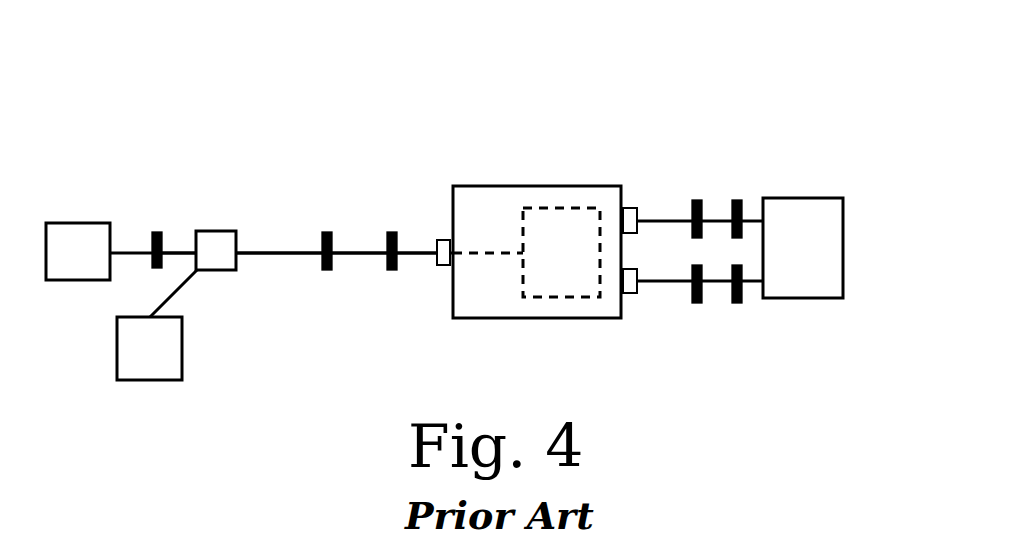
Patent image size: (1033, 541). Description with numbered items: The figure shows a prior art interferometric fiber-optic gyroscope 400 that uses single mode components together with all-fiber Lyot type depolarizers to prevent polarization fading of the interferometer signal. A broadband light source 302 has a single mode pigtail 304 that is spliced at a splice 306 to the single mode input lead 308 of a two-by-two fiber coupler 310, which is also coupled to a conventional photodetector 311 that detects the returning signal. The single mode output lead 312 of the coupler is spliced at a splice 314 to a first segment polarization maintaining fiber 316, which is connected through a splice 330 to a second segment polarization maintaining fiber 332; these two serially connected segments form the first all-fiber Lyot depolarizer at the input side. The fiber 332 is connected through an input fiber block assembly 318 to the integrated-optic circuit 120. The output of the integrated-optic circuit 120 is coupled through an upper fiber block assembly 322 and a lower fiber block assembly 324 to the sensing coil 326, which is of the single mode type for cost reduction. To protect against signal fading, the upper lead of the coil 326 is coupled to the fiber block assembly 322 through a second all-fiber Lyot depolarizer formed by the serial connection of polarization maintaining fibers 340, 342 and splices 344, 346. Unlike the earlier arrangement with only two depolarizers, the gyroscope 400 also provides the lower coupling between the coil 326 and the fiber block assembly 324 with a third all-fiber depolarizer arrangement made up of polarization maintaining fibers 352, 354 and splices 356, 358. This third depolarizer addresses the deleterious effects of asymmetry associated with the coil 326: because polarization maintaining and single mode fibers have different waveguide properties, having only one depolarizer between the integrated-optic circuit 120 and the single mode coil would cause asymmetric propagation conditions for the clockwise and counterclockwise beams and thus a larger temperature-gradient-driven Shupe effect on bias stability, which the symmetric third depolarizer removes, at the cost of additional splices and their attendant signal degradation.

The integrated-optic circuit 120 is at (553, 186).
The broadband light source 302 is at (74, 223).
The pigtail 304 is at (122, 255).
The splice 306 is at (158, 232).
The single mode input lead 308 is at (182, 252).
The fiber coupler 310 is at (218, 231).
The photodetector 311 is at (148, 381).
The output lead 312 is at (273, 253).
The splice 314 is at (327, 232).
The first segment polarization maintaining fiber 316 is at (358, 253).
The input fiber block assembly 318 is at (437, 238).
The fiber block assembly 322 is at (648, 207).
The fiber block assembly 324 is at (637, 294).
The coil 326 is at (774, 198).
The splice 330 is at (392, 232).
The second segment polarization maintaining fiber 332 is at (416, 256).
The polarization maintaining fiber 340 is at (718, 220).
The polarization maintaining fiber 342 is at (669, 218).
The splice 344 is at (735, 200).
The splice 346 is at (698, 200).
The polarization maintaining fiber 352 is at (721, 282).
The polarization maintaining fiber 354 is at (655, 282).
The splice 356 is at (750, 282).
The splice 358 is at (698, 303).
The interferometric fiber-optic gyroscope 400 is at (511, 135).